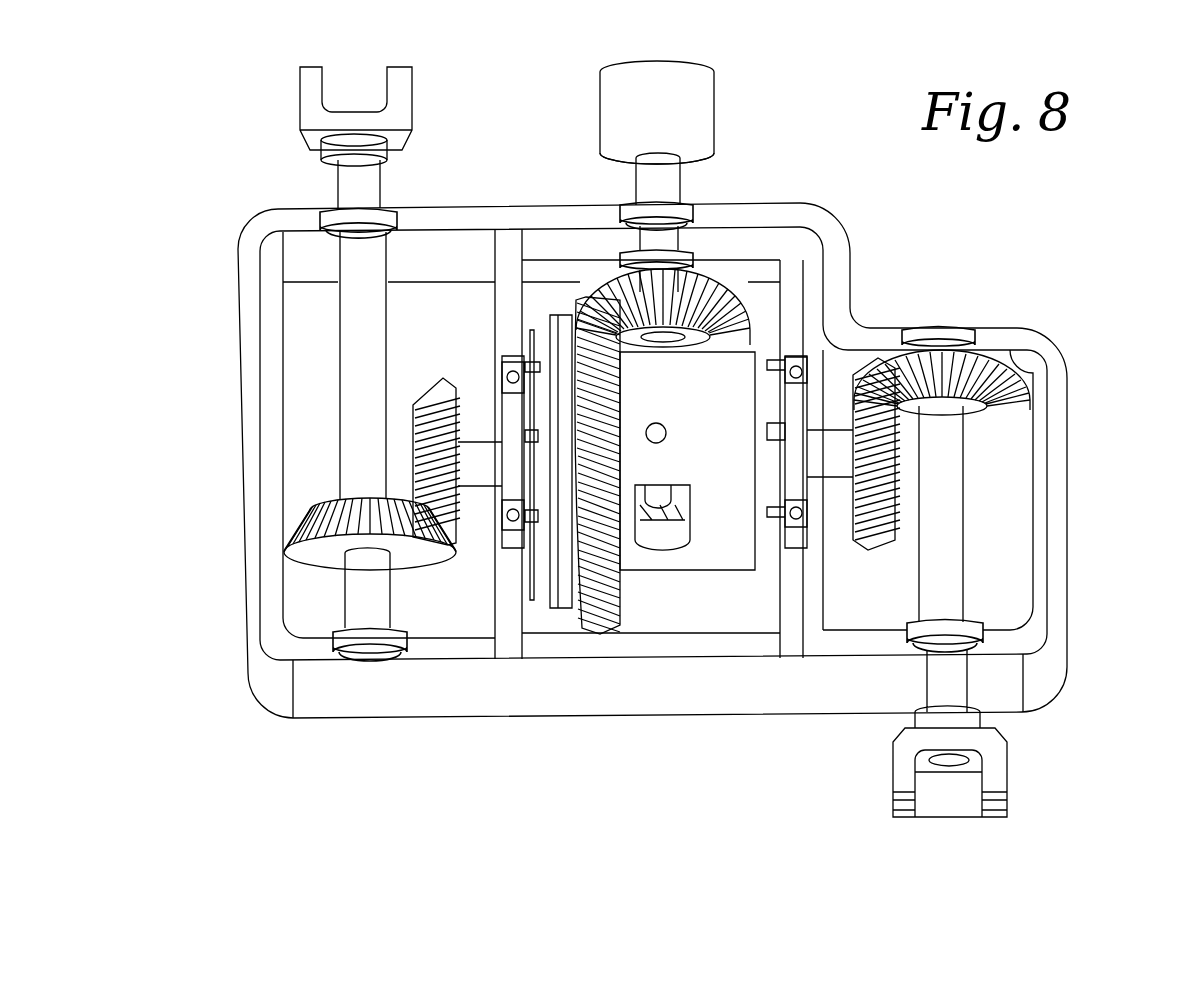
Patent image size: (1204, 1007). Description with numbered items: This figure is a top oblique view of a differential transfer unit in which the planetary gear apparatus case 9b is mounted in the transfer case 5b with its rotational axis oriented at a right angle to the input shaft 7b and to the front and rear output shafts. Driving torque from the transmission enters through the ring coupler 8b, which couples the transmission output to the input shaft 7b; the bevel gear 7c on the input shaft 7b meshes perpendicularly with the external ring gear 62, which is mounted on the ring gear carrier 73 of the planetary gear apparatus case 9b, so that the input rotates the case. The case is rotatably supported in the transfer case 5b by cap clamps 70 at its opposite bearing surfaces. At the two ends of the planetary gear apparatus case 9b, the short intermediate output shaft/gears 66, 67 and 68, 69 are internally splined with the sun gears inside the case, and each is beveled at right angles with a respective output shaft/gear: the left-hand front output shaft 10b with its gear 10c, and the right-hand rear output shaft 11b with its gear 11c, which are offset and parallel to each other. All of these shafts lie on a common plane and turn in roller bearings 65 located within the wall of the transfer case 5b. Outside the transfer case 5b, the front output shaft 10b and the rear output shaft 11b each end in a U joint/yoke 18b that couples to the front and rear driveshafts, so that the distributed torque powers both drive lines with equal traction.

The transfer case 5b is at (1055, 483).
The input shaft 7b is at (648, 173).
The bevel gear 7c is at (725, 295).
The ring coupler 8b is at (680, 103).
The planetary gear apparatus case 9b is at (715, 430).
The front output shaft 10b is at (345, 178).
The front output gear 10c is at (327, 548).
The rear output shaft 11b is at (952, 680).
The rear output gear 11c is at (1000, 385).
The U joint/yoke 18b is at (313, 108).
The external ring gear 62 is at (598, 620).
The roller bearings 65 is at (372, 213).
The short intermediate output shaft 66 is at (473, 458).
The short intermediate output gear 67 is at (435, 393).
The short intermediate output shaft 68 is at (835, 460).
The short intermediate output gear 69 is at (877, 500).
The cap clamps 70 is at (513, 460).
The ring gear carrier 73 is at (556, 560).